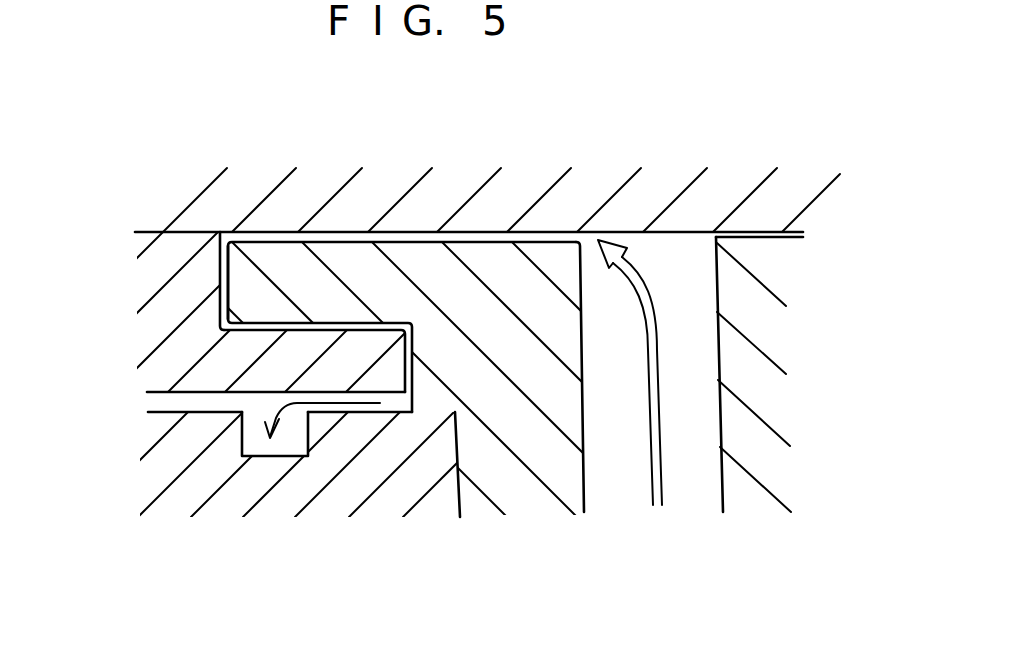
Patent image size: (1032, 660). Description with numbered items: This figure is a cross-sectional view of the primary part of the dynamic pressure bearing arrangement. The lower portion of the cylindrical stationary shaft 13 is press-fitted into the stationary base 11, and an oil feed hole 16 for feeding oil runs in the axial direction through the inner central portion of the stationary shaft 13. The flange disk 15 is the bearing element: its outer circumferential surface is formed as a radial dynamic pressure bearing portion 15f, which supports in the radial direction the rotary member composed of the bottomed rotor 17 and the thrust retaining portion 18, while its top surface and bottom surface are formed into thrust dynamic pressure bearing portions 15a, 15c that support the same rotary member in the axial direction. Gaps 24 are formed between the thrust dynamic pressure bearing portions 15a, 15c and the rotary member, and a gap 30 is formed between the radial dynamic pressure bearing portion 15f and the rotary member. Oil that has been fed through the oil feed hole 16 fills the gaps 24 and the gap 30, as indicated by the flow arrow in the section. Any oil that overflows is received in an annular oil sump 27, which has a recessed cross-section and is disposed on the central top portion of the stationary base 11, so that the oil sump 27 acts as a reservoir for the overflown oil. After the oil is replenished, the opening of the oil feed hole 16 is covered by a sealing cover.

The stationary base 11 is at (365, 473).
The stationary shaft 13 is at (522, 440).
The flange disk 15 is at (275, 255).
The thrust dynamic pressure bearing portion 15a is at (427, 250).
The thrust dynamic pressure bearing portion 15c is at (355, 336).
The radial dynamic pressure bearing portion 15f is at (222, 263).
The oil feed hole 16 is at (630, 403).
The bottomed rotor 17 is at (160, 345).
The thrust retaining portion 18 is at (640, 200).
The gaps 24 is at (330, 327).
The oil sump 27 is at (283, 443).
The gap 30 is at (220, 297).